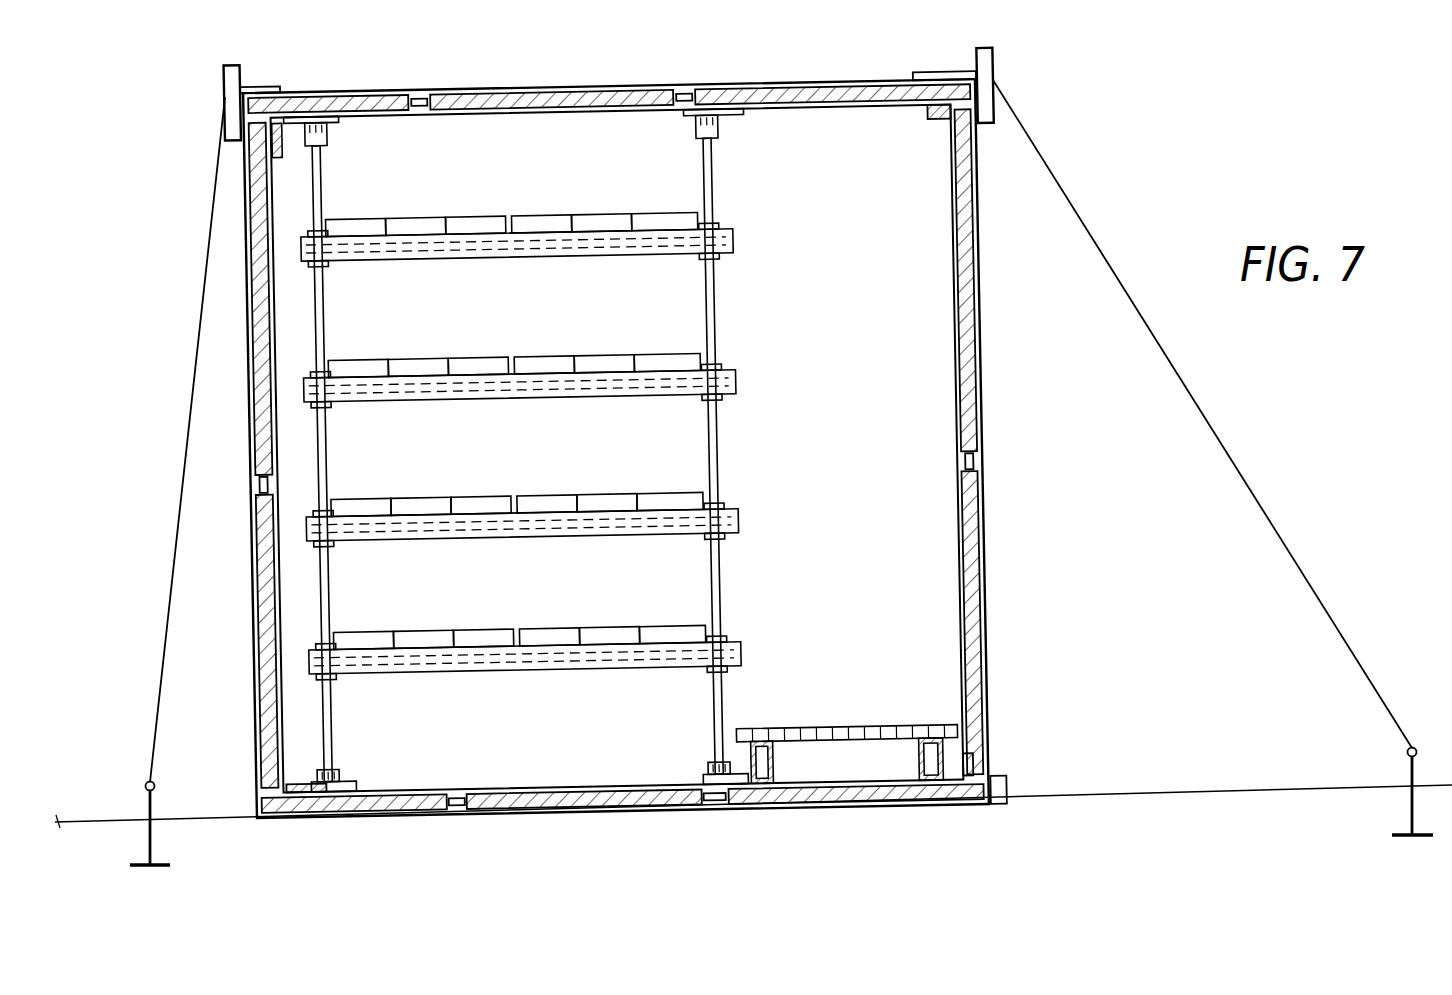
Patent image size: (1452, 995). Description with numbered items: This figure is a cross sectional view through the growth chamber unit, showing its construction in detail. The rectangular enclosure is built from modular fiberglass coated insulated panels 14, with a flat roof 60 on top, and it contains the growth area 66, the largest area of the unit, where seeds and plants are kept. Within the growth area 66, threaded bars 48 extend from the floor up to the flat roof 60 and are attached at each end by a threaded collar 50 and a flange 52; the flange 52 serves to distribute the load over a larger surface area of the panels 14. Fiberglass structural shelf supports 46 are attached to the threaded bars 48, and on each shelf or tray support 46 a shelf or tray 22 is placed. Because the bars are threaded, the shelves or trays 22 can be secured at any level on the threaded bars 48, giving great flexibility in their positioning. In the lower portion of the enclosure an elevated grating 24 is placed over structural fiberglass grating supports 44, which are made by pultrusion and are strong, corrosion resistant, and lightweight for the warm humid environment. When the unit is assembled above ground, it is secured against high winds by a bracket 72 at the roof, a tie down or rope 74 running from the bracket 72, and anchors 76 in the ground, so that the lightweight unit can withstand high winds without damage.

The modular fiberglass coated insulated panels 14 is at (772, 95).
The shelf or tray 22 is at (555, 218).
The elevated grating 24 is at (862, 727).
The structural fiberglass grating supports 44 is at (915, 752).
The shelf or tray supports 46 is at (462, 240).
The threaded bars 48 is at (327, 192).
The threaded collar 50 is at (330, 130).
The flange 52 is at (338, 122).
The flat roof 60 is at (594, 80).
The growth area 66 is at (629, 735).
The bracket 72 is at (224, 70).
The tie down or rope 74 is at (1062, 170).
The anchors 76 is at (160, 812).